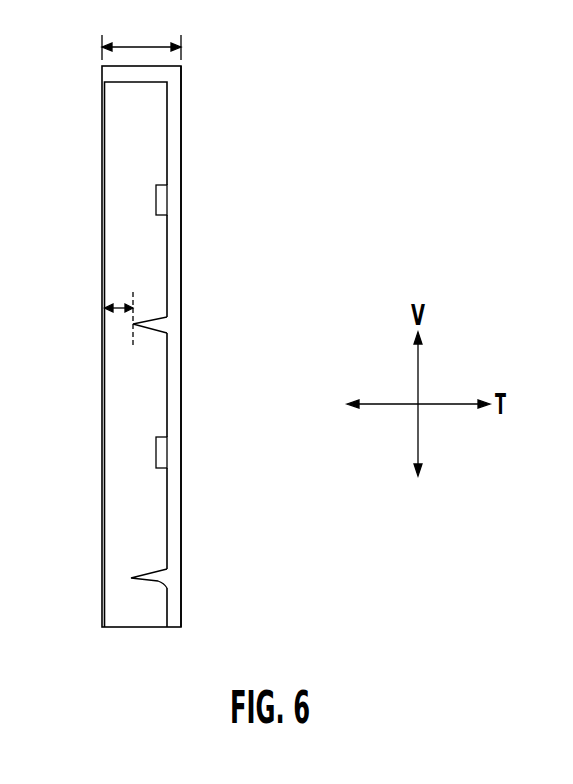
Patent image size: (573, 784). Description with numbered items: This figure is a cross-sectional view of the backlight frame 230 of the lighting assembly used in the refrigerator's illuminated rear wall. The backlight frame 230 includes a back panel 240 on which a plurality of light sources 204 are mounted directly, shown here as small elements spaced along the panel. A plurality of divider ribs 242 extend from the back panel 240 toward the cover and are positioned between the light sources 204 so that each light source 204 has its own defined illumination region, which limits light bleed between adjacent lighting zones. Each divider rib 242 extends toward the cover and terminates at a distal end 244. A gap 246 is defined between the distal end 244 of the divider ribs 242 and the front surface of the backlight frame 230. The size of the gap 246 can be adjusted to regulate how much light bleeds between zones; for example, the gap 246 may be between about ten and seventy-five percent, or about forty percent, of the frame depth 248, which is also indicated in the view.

The backlight frame 230 is at (336, 119).
The back panel 240 is at (212, 346).
The light source 204 is at (160, 200).
The divider rib 242 is at (152, 327).
The distal end 244 is at (128, 577).
The gap 246 is at (118, 300).
The frame depth 248 is at (143, 47).